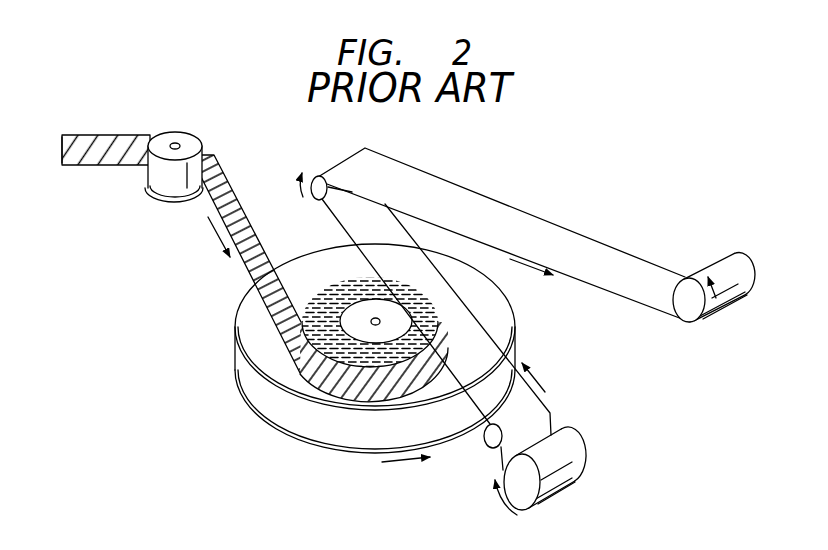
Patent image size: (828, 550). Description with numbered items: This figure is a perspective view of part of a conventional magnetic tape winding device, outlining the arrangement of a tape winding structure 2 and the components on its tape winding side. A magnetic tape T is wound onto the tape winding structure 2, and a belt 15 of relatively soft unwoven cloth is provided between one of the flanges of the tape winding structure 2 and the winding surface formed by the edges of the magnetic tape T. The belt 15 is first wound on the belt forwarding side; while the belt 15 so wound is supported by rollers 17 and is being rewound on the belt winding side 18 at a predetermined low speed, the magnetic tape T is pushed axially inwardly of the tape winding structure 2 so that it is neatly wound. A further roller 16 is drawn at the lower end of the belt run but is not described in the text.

The tape winding structure 2 is at (280, 388).
The magnetic tape T is at (217, 188).
The belt 15 is at (580, 243).
The drive roller 16 is at (583, 462).
The rollers 17 is at (318, 175).
The belt winding side 18 is at (693, 318).